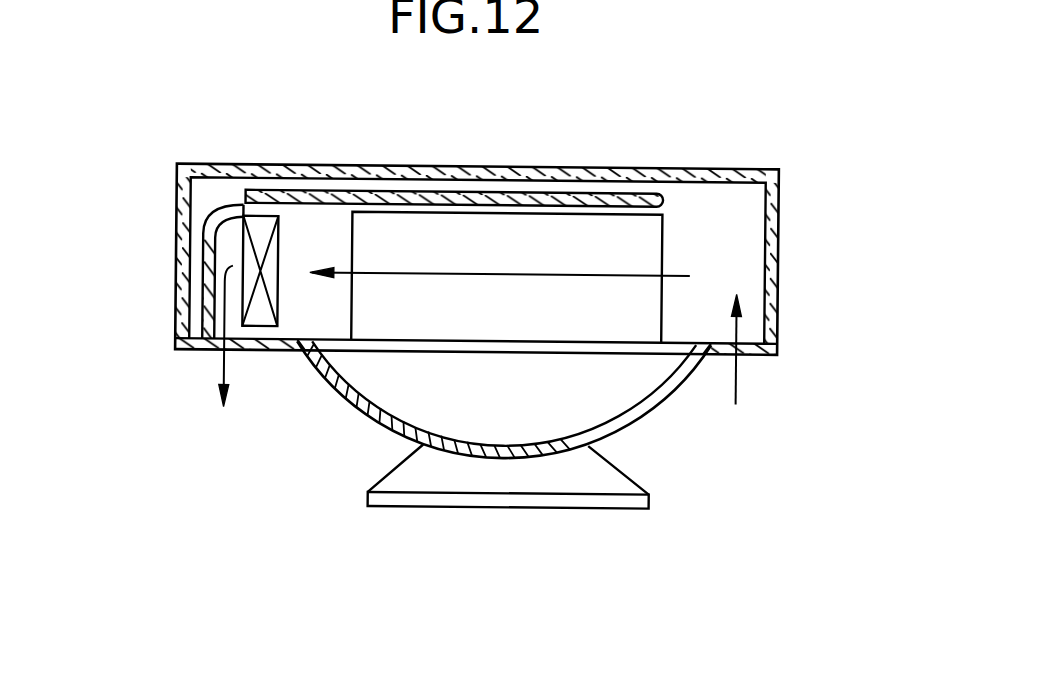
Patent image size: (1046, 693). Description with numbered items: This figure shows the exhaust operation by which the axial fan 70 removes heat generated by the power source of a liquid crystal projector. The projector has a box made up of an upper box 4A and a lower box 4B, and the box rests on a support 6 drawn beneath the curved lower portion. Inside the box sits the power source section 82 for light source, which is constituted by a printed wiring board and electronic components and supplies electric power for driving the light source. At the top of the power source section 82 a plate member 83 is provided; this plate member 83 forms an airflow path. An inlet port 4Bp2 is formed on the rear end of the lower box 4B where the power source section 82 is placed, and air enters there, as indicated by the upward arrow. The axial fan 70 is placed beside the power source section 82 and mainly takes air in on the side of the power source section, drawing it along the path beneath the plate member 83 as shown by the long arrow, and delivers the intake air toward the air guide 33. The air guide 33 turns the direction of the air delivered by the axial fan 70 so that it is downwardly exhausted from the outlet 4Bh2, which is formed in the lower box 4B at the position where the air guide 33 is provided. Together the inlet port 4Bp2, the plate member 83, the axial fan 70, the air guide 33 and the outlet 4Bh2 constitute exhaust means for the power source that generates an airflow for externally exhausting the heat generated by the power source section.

The upper box 4A is at (773, 207).
The lower box 4B is at (672, 395).
The outlet 4Bh2 is at (230, 357).
The inlet port 4Bp2 is at (743, 358).
The support 6 is at (607, 473).
The air guide 33 is at (190, 223).
The axial fan 70 is at (278, 256).
The power source section for light source 82 is at (652, 243).
The plate member 83 is at (527, 198).